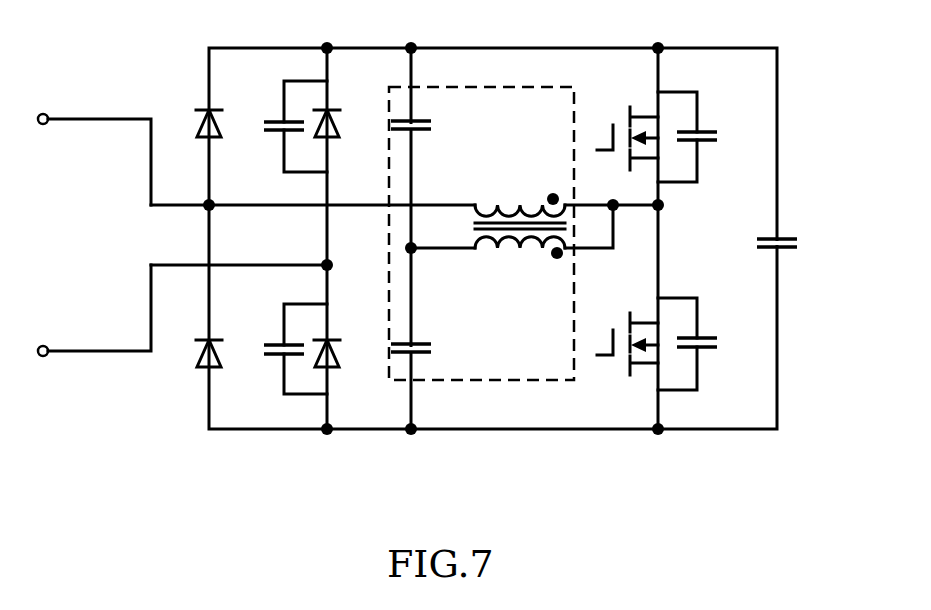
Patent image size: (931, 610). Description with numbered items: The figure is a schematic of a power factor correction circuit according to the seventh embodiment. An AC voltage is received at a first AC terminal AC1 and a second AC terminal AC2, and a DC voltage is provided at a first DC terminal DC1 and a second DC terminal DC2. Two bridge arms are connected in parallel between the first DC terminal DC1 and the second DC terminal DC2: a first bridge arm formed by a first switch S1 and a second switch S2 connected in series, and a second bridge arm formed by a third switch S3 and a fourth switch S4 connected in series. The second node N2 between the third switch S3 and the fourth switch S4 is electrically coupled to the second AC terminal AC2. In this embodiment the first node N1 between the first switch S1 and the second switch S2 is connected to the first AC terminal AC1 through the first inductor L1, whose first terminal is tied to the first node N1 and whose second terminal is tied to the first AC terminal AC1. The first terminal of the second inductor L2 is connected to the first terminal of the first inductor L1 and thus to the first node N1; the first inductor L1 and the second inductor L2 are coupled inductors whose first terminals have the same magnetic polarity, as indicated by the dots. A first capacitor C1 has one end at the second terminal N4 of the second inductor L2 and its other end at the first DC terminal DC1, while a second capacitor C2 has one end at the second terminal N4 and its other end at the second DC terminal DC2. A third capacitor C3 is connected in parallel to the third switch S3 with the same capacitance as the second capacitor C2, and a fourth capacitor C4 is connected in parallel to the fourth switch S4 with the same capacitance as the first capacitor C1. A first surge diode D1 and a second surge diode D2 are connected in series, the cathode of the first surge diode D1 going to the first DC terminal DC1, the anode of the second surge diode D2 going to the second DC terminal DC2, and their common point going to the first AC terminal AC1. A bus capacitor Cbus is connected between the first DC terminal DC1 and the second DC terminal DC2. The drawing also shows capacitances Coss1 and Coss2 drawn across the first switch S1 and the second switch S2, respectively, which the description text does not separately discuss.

The first AC terminal AC1 is at (94, 145).
The second AC terminal AC2 is at (94, 310).
The first surge diode D1 is at (195, 109).
The second surge diode D2 is at (195, 370).
The third switch S3 is at (343, 127).
The fourth switch S4 is at (343, 354).
The third capacitor C3 is at (288, 126).
The fourth capacitor C4 is at (287, 351).
The first capacitor C1 is at (427, 112).
The second capacitor C2 is at (427, 340).
The first inductor L1 is at (520, 196).
The second inductor L2 is at (520, 261).
The first node N1 is at (679, 220).
The second node N2 is at (348, 267).
The second terminal of the second inductor N4 is at (427, 266).
The first switch S1 is at (620, 138).
The second switch S2 is at (620, 344).
The output capacitance of S1 Coss1 is at (714, 137).
The output capacitance of S2 Coss2 is at (714, 344).
The bus capacitor Cbus is at (798, 260).
The first DC terminal DC1 is at (739, 68).
The second DC terminal DC2 is at (738, 414).